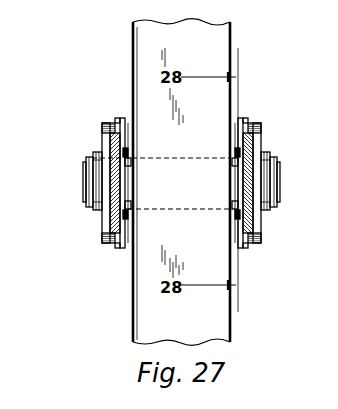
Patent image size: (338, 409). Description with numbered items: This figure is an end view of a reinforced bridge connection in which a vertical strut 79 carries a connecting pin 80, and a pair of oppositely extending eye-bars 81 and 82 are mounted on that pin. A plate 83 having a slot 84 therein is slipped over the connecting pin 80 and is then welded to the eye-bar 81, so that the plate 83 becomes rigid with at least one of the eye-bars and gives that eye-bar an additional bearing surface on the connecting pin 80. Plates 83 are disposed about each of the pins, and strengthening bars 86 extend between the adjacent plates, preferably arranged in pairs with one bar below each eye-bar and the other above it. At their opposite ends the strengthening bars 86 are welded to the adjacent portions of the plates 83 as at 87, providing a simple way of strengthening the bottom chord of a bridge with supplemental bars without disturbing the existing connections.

The vertical strut 79 is at (130, 298).
The connecting pin 80 is at (85, 182).
The eye-bar 81 is at (100, 198).
The eye-bar 82 is at (108, 145).
The plate 83 is at (122, 118).
The slot 84 is at (125, 160).
The strengthening bar 86 is at (110, 132).
The weld 87 is at (115, 121).